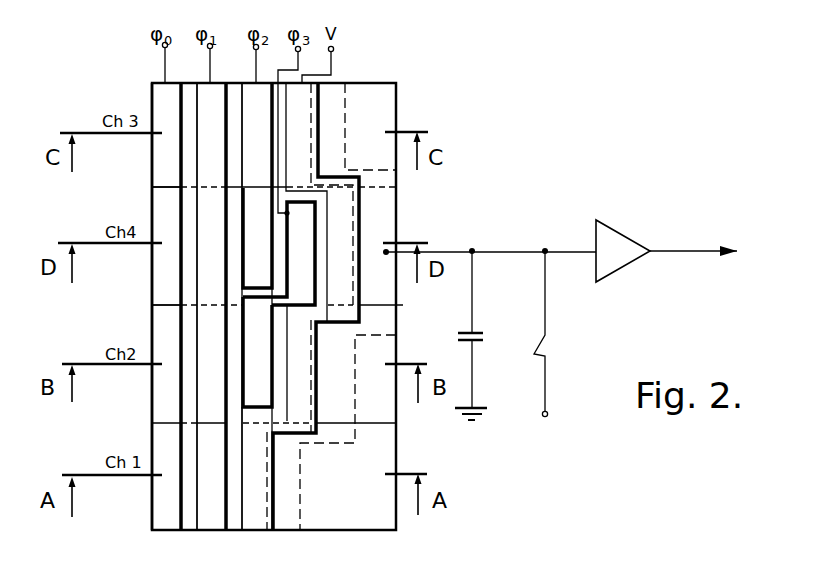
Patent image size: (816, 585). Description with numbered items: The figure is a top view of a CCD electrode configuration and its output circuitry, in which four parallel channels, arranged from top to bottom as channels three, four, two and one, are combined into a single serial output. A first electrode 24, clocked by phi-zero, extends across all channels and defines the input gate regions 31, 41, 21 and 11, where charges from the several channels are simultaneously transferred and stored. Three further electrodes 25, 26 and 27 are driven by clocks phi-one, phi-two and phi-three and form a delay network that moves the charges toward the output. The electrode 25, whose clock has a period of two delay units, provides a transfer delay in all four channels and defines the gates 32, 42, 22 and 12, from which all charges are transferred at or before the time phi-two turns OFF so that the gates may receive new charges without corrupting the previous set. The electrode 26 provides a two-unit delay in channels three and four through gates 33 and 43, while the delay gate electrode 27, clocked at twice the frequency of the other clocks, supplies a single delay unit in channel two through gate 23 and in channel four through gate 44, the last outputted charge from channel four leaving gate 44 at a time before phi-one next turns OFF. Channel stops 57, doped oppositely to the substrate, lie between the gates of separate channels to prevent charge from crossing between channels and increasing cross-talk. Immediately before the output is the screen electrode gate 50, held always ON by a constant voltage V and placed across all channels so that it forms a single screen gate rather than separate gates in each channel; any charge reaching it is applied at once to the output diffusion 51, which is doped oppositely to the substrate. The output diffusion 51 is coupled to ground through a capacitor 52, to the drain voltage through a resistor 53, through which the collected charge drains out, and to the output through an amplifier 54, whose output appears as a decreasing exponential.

The input gate region 11 is at (163, 476).
The gate region 12 is at (209, 476).
The input gate region 21 is at (162, 364).
The gate region 22 is at (209, 364).
The gate region 23 is at (257, 354).
The electrode 24 is at (175, 531).
The electrode 25 is at (221, 531).
The electrode 26 is at (252, 88).
The delay gate electrode 27 is at (315, 272).
The input gate region 31 is at (163, 135).
The gate region 32 is at (209, 135).
The gate region 33 is at (254, 135).
The input gate region 41 is at (162, 246).
The gate region 42 is at (209, 246).
The gate region 43 is at (257, 185).
The gate region 44 is at (279, 253).
The screen electrode gate 50 is at (255, 468).
The output diffusion 51 is at (279, 533).
The capacitor 52 is at (477, 332).
The resistor 53 is at (548, 337).
The amplifier 54 is at (622, 232).
The channel stops 57 is at (154, 304).